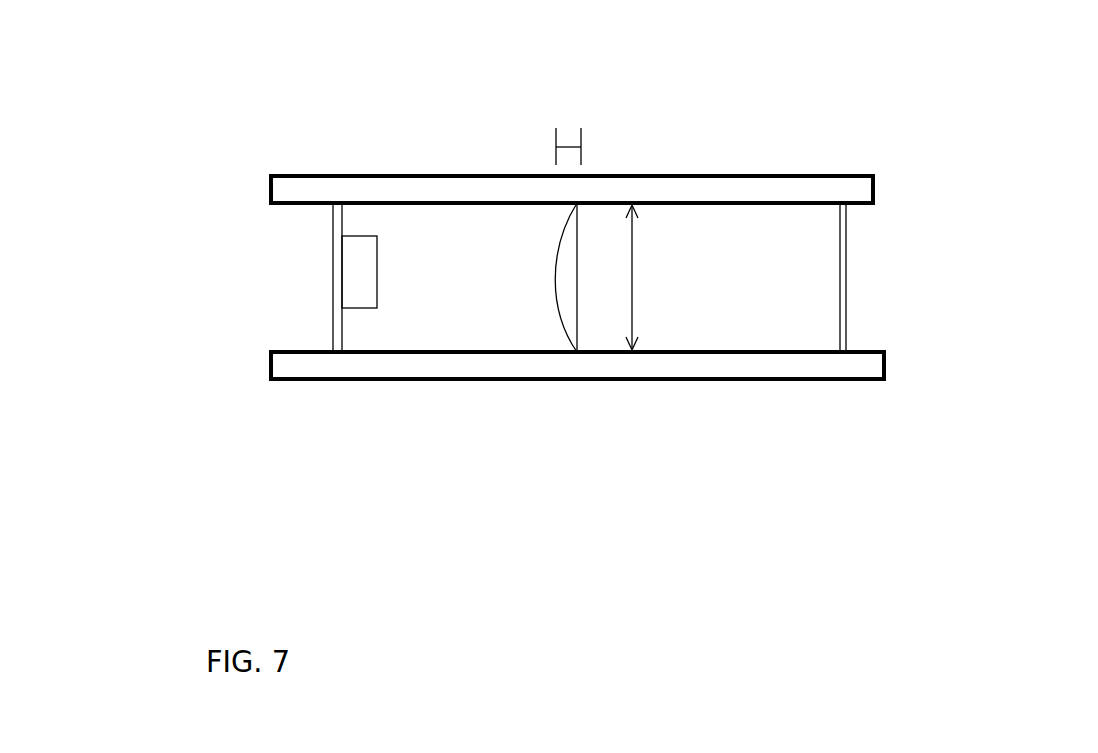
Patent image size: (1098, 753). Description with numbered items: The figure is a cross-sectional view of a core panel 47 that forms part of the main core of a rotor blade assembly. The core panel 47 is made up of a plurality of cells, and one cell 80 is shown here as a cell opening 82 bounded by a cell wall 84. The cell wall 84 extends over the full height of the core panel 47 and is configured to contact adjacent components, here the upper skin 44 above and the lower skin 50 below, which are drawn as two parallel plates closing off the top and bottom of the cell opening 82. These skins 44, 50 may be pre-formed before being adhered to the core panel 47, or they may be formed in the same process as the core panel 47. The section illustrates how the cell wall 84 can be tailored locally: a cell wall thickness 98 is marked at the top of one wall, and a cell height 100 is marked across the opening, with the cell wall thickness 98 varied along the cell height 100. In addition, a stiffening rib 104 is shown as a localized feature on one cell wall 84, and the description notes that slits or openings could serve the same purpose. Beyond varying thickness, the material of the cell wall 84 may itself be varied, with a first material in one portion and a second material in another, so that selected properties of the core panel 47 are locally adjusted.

The upper skin 44 is at (791, 192).
The lower skin 50 is at (808, 367).
The cell wall 84 is at (335, 236).
The stiffening rib 104 is at (365, 273).
The cell wall thickness 98 is at (572, 145).
The cell height 100 is at (650, 277).
The cell opening 82 is at (705, 243).
The cell 80 is at (410, 339).
The core panel 47 is at (915, 228).